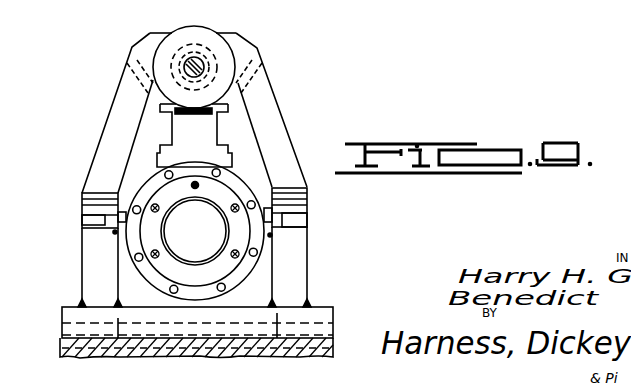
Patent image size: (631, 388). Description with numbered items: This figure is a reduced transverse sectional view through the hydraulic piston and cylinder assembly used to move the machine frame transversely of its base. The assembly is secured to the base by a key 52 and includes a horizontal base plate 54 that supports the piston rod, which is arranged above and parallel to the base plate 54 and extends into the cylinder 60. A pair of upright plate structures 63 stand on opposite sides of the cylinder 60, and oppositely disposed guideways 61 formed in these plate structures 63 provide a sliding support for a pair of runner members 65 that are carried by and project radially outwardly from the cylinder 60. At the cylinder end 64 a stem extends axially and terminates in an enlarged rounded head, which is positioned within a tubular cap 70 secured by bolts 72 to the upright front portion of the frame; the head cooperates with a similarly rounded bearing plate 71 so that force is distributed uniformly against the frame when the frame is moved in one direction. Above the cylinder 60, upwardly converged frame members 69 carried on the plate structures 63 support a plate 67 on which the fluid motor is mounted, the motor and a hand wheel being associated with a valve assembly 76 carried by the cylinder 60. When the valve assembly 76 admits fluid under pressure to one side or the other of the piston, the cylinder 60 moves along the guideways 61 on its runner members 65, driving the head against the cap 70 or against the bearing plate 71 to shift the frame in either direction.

The key 52 is at (241, 361).
The base plate 54 is at (320, 313).
The cylinder 60 is at (243, 178).
The guideways 61 is at (82, 219).
The plate structures 63 is at (93, 263).
The cylinder end 64 is at (243, 267).
The runner members 65 is at (113, 215).
The plate 67 is at (210, 29).
The frame members 69 is at (122, 82).
The tubular cap 70 is at (163, 268).
The bearing plate 71 is at (188, 250).
The bolts 72 is at (195, 188).
The valve assembly 76 is at (175, 128).